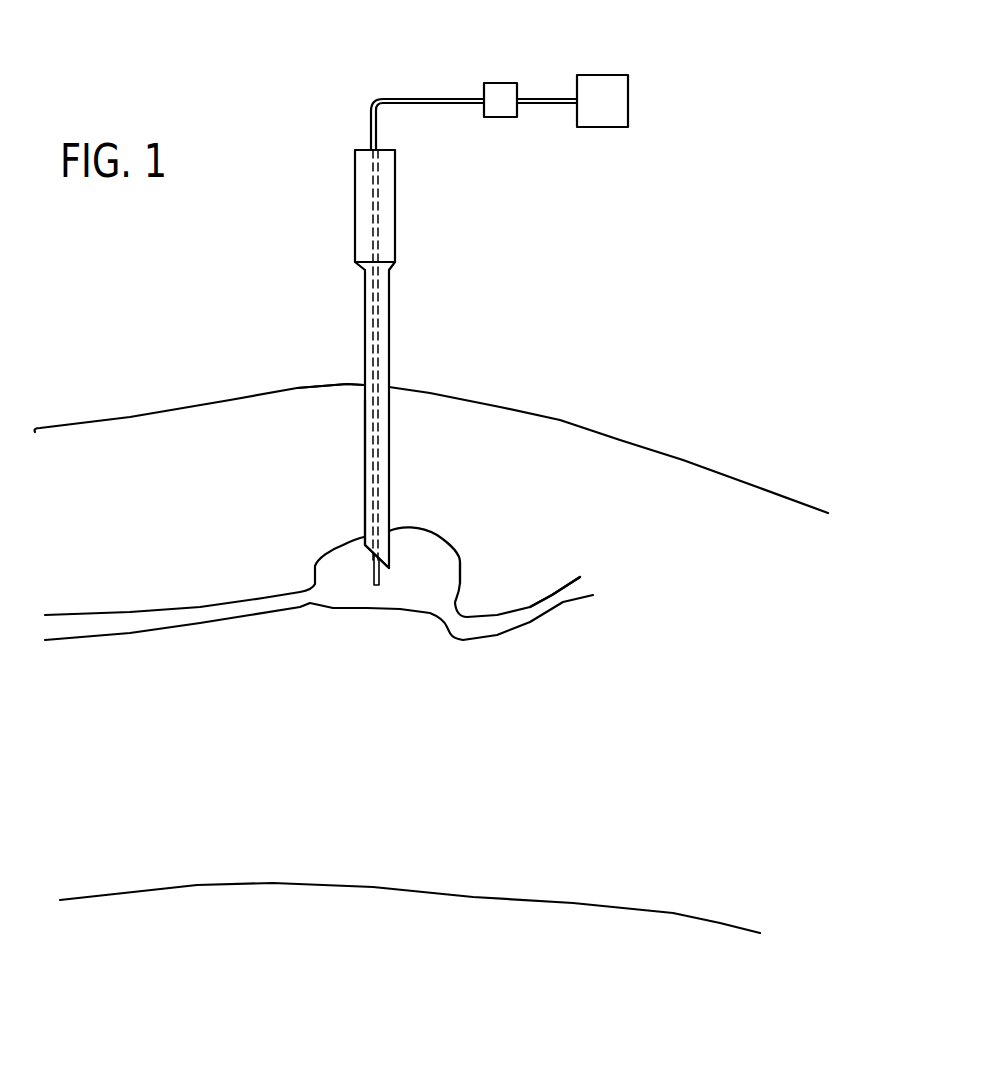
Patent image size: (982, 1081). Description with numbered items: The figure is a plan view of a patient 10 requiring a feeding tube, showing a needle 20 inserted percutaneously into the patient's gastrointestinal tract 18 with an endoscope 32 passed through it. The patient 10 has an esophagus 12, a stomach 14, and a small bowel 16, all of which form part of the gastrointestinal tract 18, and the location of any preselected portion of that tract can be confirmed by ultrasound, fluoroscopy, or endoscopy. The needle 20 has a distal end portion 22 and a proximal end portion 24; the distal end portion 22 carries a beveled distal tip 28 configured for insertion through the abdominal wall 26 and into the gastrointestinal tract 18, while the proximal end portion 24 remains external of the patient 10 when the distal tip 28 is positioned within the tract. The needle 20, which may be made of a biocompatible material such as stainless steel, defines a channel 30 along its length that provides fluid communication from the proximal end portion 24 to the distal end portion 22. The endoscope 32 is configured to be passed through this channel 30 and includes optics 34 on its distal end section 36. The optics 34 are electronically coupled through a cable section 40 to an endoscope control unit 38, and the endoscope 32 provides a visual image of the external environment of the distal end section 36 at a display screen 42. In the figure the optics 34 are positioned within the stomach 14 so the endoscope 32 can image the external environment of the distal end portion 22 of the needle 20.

The patient 10 is at (683, 458).
The esophagus 12 is at (130, 611).
The stomach 14 is at (460, 558).
The small bowel 16 is at (552, 594).
The gastrointestinal tract 18 is at (232, 622).
The needle 20 is at (390, 361).
The distal end portion 22 is at (365, 478).
The proximal end portion 24 is at (355, 223).
The abdominal wall 26 is at (339, 383).
The beveled distal tip 28 is at (390, 560).
The channel 30 is at (388, 181).
The endoscope 32 is at (425, 97).
The optics 34 is at (378, 585).
The distal end section 36 is at (373, 569).
The endoscope control unit 38 is at (500, 118).
The cable section 40 is at (369, 120).
The display screen 42 is at (600, 75).